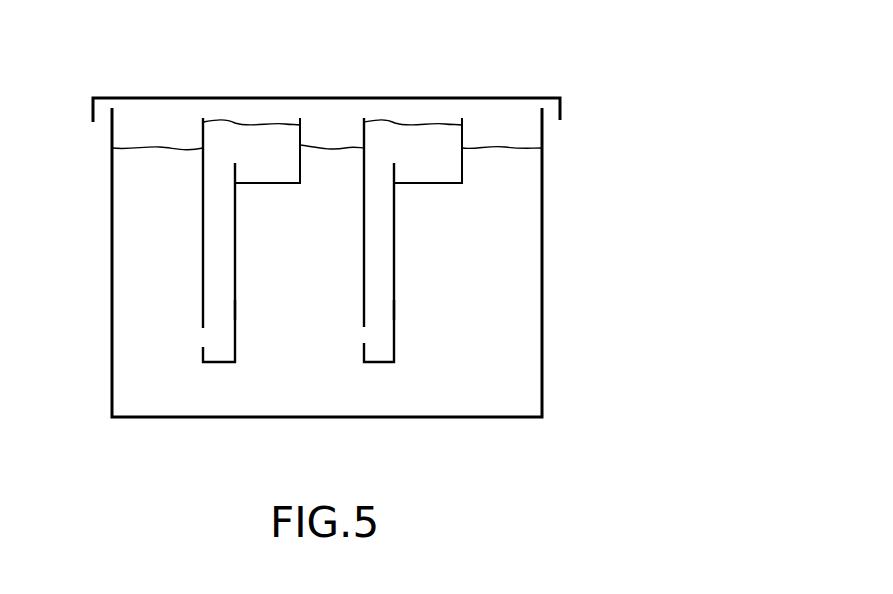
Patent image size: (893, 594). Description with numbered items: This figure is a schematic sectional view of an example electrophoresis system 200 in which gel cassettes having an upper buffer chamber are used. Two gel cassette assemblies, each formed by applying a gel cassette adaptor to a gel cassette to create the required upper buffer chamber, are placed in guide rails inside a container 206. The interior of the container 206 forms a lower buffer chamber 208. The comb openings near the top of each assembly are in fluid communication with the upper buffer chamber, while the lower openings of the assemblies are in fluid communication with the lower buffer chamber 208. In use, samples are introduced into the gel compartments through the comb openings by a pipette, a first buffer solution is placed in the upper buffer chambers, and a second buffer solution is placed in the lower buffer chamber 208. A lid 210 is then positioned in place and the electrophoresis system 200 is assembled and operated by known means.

The electrophoresis system 200 is at (628, 225).
The container 206 is at (542, 337).
The lower buffer chamber 208 is at (467, 283).
The lid 210 is at (142, 97).